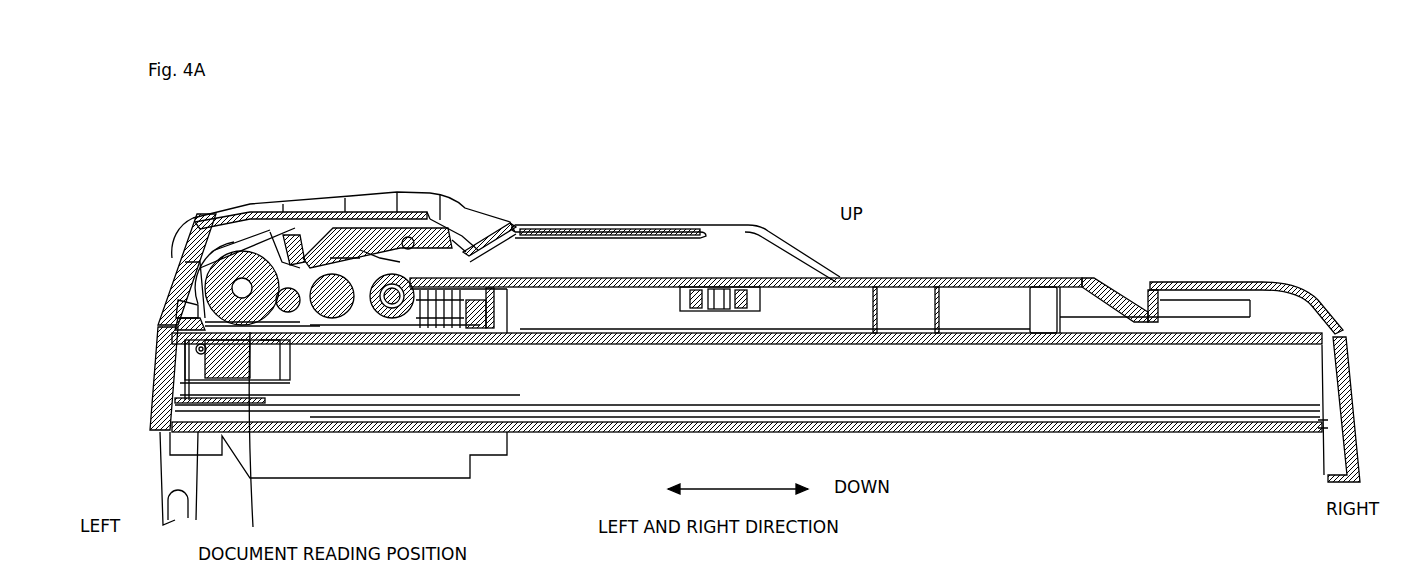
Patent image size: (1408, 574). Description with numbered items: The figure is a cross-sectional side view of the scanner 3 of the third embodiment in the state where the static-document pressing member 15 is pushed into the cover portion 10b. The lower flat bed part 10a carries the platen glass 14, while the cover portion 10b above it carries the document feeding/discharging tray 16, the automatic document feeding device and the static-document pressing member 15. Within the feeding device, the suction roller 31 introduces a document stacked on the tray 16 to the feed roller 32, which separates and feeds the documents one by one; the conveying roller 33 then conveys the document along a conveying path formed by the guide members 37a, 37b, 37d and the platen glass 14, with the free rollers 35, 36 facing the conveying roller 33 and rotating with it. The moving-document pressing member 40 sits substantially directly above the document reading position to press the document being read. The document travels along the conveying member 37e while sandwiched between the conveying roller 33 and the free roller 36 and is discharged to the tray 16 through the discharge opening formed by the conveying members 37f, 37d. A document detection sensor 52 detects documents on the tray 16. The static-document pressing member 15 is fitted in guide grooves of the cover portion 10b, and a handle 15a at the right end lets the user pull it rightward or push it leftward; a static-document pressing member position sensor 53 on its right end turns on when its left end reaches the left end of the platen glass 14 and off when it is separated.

The scanner 3 is at (895, 230).
The flat bed part 10a is at (1040, 436).
The cover portion 10b is at (1012, 278).
The platen glass 14 is at (902, 345).
The static-document pressing member 15 is at (1225, 333).
The handle 15a is at (1343, 332).
The document feeding/discharging tray 16 is at (615, 228).
The suction roller 31 is at (392, 320).
The feed roller 32 is at (333, 320).
The conveying roller 33 is at (205, 220).
The free roller 35 is at (168, 312).
The free roller 36 is at (222, 268).
The guide member 37a is at (173, 257).
The guide member 37b is at (175, 307).
The conveying member 37d is at (395, 212).
The conveying member 37e is at (293, 252).
The conveying member 37f is at (457, 237).
The moving-document pressing member 40 is at (243, 350).
The document detection sensor 52 is at (335, 252).
The static-document pressing member position sensor 53 is at (265, 345).